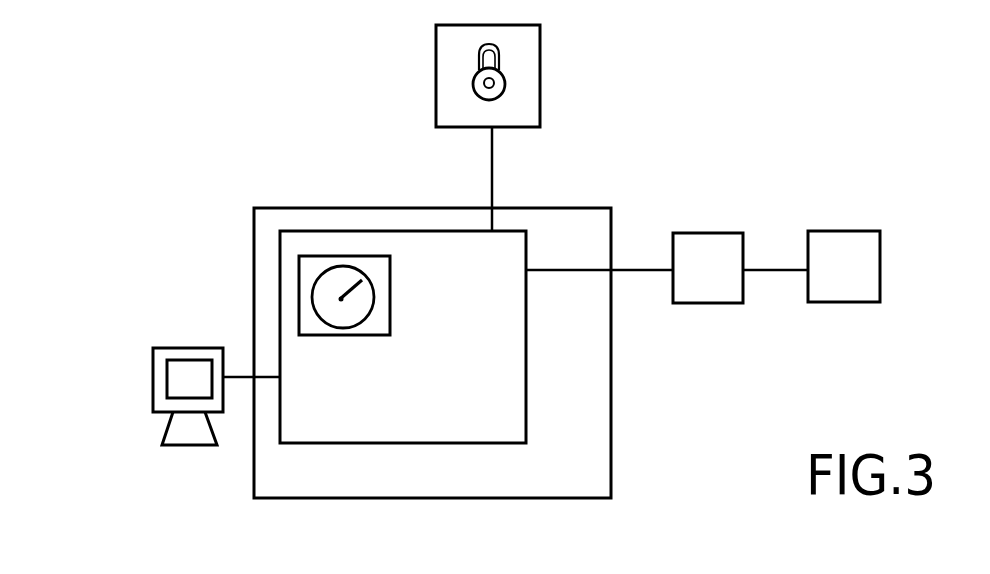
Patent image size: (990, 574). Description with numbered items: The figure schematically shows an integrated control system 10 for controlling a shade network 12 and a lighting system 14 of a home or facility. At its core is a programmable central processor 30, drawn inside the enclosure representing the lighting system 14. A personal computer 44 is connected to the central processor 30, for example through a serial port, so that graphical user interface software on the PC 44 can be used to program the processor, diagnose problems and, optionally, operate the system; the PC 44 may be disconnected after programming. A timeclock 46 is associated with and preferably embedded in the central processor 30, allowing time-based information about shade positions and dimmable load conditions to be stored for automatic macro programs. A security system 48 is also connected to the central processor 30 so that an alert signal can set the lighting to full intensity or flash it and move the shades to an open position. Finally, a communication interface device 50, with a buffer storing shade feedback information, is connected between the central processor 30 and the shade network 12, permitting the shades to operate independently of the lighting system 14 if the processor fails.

The integrated control system 10 is at (298, 146).
The shade network 12 is at (860, 283).
The lighting system 14 is at (578, 479).
The central processor 30 is at (435, 413).
The personal computer 44 is at (153, 370).
The timeclock 46 is at (391, 295).
The security system 48 is at (541, 82).
The communication interface device 50 is at (731, 285).